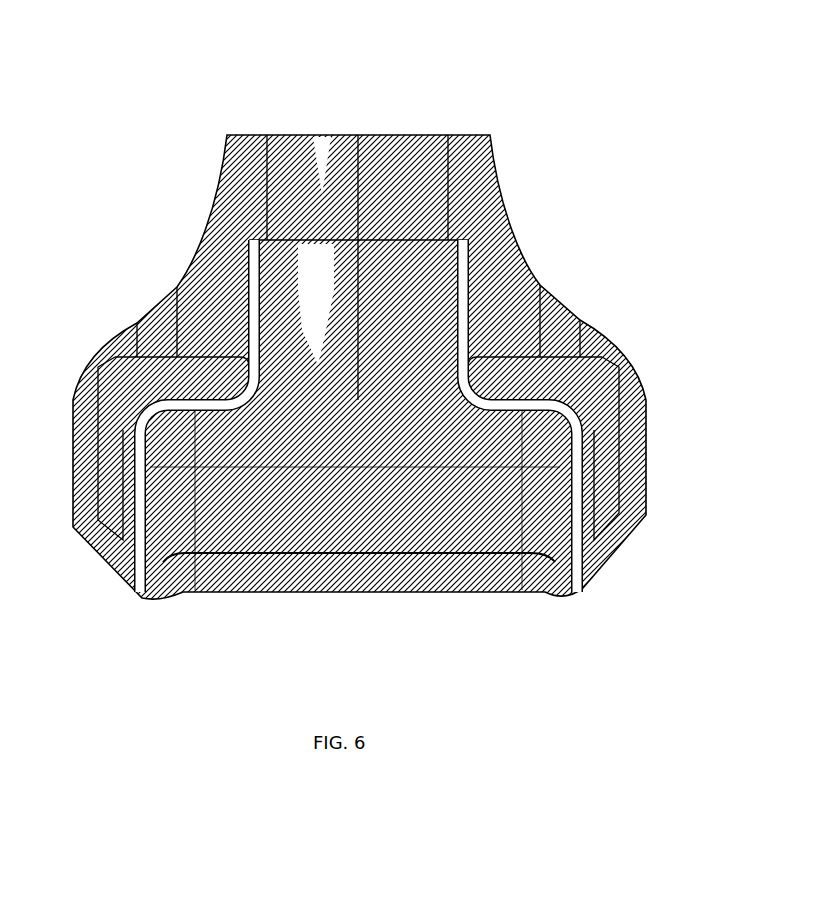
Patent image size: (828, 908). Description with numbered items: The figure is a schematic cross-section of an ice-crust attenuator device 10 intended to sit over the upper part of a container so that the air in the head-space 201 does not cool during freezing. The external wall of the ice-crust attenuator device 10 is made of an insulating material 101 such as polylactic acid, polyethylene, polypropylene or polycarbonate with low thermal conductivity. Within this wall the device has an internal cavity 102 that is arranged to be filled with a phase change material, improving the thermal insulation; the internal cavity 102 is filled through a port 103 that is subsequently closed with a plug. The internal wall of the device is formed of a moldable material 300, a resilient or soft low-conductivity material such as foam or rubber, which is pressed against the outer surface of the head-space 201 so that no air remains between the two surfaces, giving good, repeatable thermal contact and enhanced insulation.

The ice-crust attenuator device 10 is at (215, 78).
The insulating material 101 is at (518, 250).
The internal cavity 102 is at (637, 378).
The port 103 is at (153, 310).
The head-space 201 is at (290, 510).
The moldable material 300 is at (578, 593).